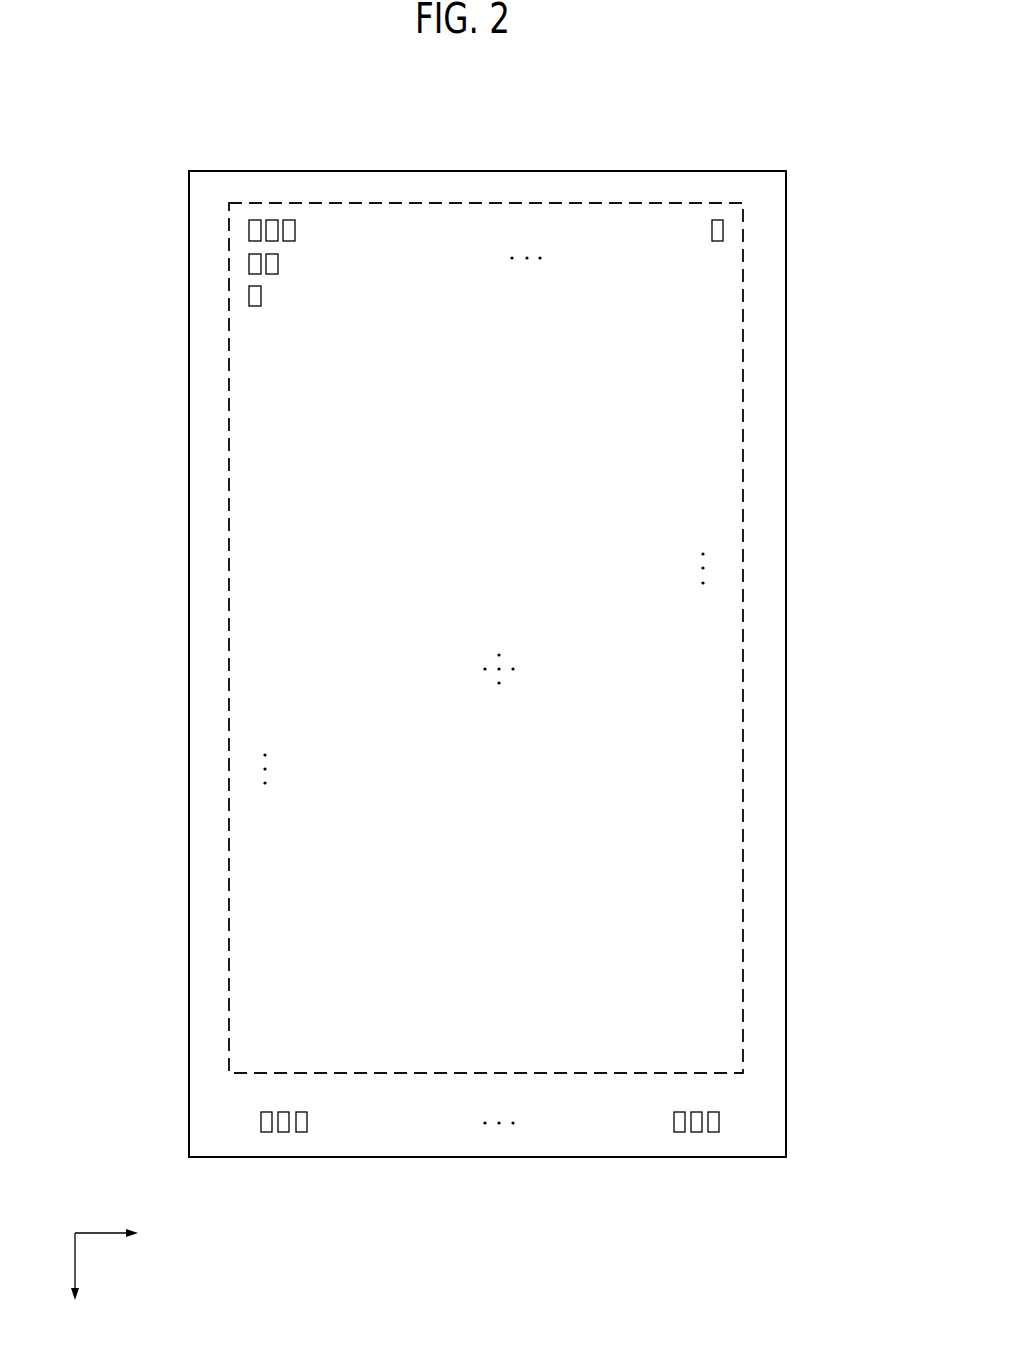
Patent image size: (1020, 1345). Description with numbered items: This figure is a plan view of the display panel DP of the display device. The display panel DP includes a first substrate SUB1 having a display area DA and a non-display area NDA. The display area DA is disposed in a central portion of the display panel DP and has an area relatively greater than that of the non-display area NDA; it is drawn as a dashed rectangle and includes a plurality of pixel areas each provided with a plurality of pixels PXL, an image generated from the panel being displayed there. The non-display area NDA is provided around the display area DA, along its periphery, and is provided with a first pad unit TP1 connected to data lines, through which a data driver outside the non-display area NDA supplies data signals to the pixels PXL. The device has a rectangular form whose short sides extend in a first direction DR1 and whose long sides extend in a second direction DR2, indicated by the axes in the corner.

The display panel DP is at (832, 132).
The first substrate SUB1 is at (640, 171).
The non-display area NDA is at (488, 182).
The display area DA is at (316, 202).
The pixel PXL is at (250, 257).
The first pad unit TP1 is at (264, 1133).
The first direction DR1 is at (123, 1236).
The second direction DR2 is at (77, 1283).